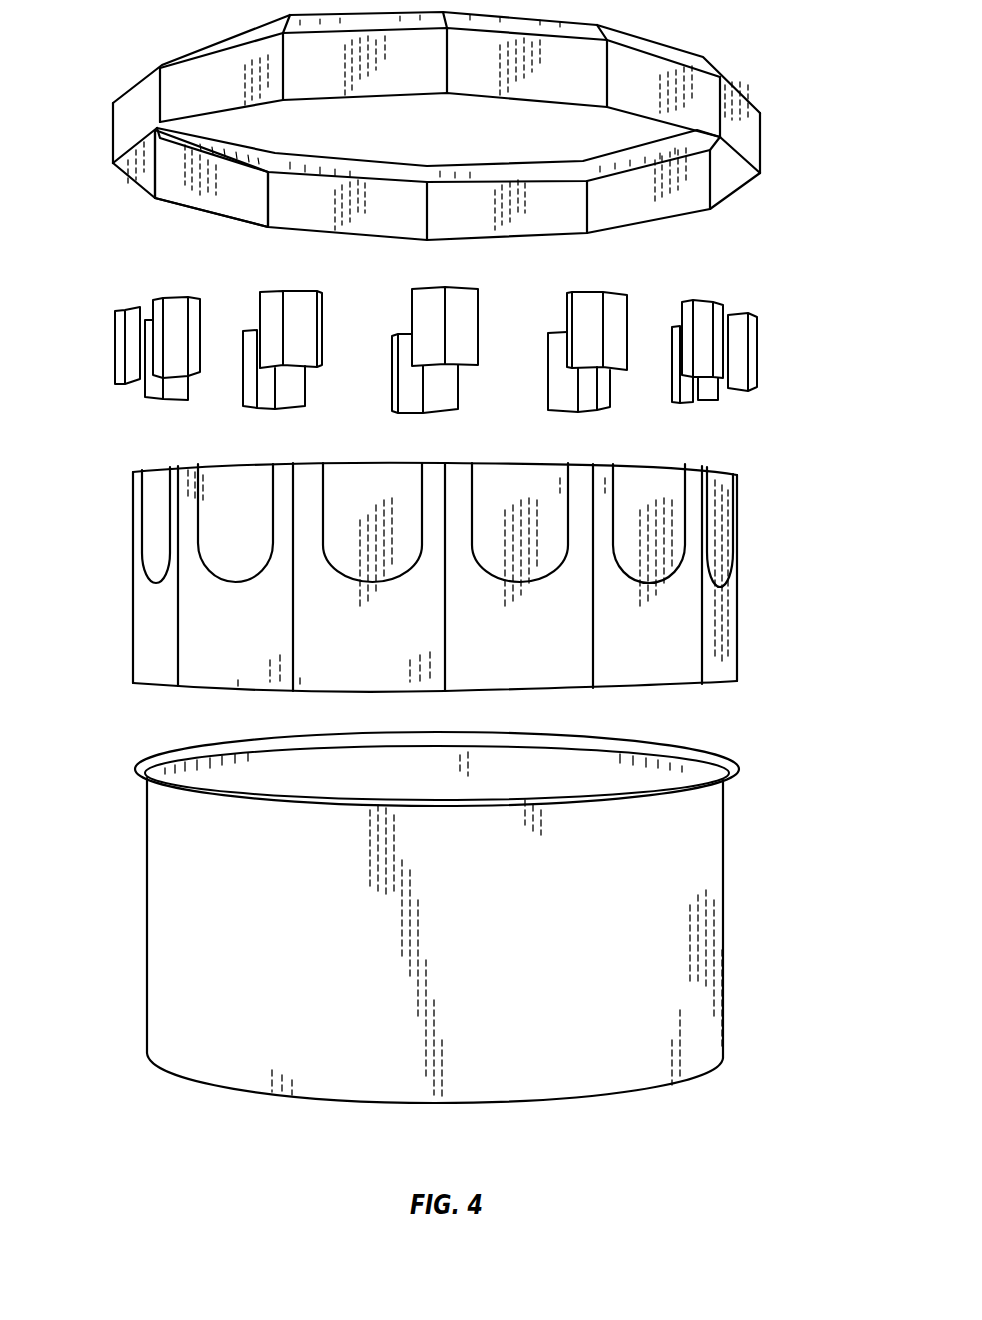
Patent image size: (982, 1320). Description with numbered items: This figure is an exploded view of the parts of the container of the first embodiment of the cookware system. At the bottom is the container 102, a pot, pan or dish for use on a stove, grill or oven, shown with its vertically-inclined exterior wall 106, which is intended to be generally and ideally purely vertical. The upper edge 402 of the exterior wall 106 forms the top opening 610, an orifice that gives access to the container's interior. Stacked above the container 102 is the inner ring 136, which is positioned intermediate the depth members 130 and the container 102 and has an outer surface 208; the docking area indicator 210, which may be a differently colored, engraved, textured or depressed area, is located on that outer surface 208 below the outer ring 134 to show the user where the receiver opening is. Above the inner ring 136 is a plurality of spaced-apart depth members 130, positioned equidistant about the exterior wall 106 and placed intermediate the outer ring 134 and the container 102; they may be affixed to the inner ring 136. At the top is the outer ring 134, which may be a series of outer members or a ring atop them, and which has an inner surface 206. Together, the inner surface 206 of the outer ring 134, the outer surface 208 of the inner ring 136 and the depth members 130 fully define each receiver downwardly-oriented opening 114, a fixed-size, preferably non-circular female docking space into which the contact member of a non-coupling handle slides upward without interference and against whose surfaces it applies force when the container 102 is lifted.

The outer ring 134 is at (760, 128).
The inner surface 206 is at (242, 205).
The receiver downwardly-oriented opening 114 is at (652, 308).
The depth members 130 is at (756, 359).
The inner ring 136 is at (732, 627).
The outer surface 208 is at (142, 627).
The docking area indicator 210 is at (723, 513).
The container 102 is at (432, 902).
The vertically-inclined exterior wall 106 is at (722, 908).
The upper edge 402 is at (723, 760).
The top opening 610 is at (404, 777).